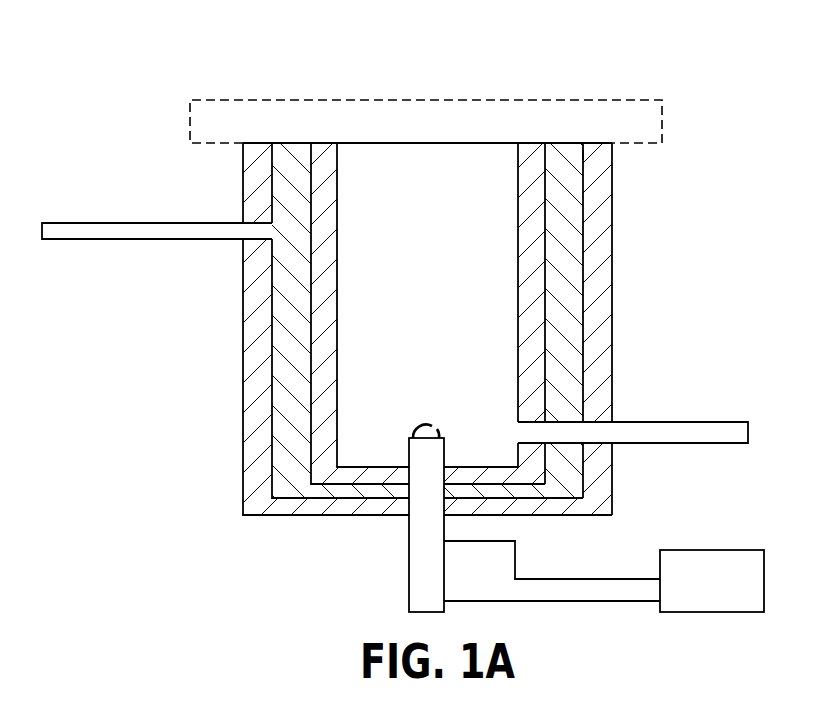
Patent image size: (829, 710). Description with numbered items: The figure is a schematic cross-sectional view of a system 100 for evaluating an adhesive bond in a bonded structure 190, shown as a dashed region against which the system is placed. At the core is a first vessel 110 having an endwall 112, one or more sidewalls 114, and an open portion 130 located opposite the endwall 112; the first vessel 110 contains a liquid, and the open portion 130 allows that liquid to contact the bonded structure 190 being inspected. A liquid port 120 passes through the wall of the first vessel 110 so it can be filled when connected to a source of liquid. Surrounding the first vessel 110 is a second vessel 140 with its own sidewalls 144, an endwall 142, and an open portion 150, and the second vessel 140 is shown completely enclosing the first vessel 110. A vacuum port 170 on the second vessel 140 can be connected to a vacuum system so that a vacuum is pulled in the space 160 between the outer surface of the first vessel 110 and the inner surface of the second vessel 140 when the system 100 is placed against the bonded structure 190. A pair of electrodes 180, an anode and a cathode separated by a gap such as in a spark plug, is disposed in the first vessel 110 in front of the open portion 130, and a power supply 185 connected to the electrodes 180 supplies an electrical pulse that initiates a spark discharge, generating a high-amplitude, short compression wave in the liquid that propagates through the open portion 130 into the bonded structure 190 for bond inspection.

The system 100 is at (440, 66).
The first vessel 110 is at (530, 143).
The endwall 112 is at (363, 467).
The sidewalls 114 is at (338, 350).
The liquid port 120 is at (720, 422).
The open portion 130 is at (387, 145).
The second vessel 140 is at (593, 143).
The endwall 142 is at (297, 515).
The sidewalls 144 is at (612, 240).
The open portion 150 is at (285, 158).
The space 160 is at (567, 352).
The vacuum port 170 is at (143, 223).
The pair of electrodes 180 is at (433, 425).
The power supply 185 is at (696, 593).
The bonded structure 190 is at (664, 122).